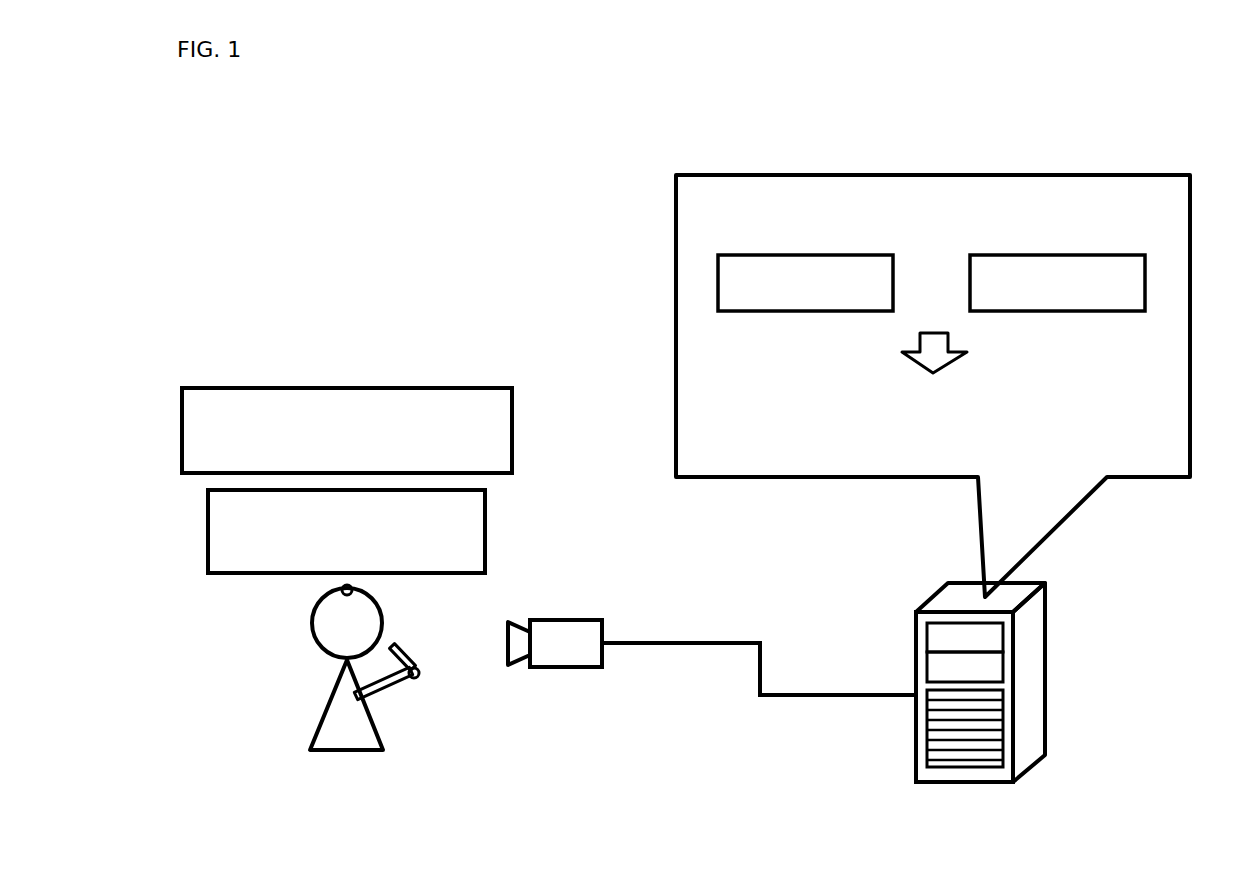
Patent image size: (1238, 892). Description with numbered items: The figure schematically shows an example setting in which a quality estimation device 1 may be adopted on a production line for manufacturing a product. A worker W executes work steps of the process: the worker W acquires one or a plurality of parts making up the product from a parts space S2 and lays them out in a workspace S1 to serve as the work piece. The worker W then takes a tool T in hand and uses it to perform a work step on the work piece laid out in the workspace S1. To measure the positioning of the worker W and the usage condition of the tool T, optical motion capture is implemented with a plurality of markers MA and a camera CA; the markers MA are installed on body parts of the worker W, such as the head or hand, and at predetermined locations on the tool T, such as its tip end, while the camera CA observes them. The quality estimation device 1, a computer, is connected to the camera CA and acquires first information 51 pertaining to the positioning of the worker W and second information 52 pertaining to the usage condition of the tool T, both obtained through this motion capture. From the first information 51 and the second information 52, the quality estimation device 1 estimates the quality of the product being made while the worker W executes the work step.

The quality estimation device 1 is at (1045, 675).
The first information 51 is at (805, 253).
The second information 52 is at (1057, 253).
The workspace S1 is at (208, 538).
The parts space S2 is at (182, 430).
The worker W is at (326, 712).
The tool T is at (412, 656).
The marker MA is at (342, 584).
The camera CA is at (564, 620).